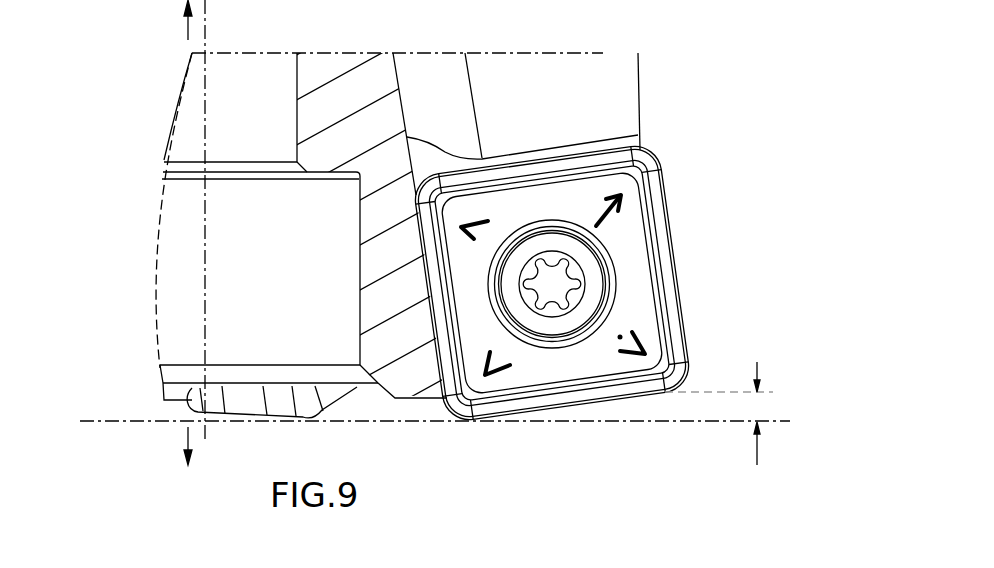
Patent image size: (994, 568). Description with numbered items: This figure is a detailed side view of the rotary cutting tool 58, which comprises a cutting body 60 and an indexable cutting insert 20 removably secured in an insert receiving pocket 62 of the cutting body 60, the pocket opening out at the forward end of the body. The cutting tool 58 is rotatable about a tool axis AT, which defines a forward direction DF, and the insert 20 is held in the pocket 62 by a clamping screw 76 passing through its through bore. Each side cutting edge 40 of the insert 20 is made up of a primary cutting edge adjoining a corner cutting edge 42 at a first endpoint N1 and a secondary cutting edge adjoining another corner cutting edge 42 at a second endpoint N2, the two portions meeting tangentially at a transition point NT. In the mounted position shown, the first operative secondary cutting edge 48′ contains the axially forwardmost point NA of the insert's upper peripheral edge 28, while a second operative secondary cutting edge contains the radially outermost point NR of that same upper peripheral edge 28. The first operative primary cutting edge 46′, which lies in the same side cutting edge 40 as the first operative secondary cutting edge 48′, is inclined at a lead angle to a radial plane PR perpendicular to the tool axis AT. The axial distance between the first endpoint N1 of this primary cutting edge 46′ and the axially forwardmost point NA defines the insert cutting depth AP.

The cutting insert 20 is at (574, 333).
The upper peripheral edge 28 is at (683, 260).
The side cutting edge 40 is at (678, 290).
The corner cutting edge 42 is at (697, 378).
The first operative primary cutting edge 46′ is at (582, 402).
The first operative secondary cutting edge 48′ is at (503, 422).
The rotary cutting tool 58 is at (163, 148).
The cutting body 60 is at (348, 85).
The insert receiving pocket 62 is at (562, 148).
The clamping screw 76 is at (572, 276).
The first endpoint N1 is at (657, 375).
The second endpoint N2 is at (688, 367).
The transition point NT is at (683, 322).
The radially outermost point NR is at (686, 357).
The axially forwardmost point NA is at (480, 420).
The radial plane PR is at (436, 429).
The tool axis AT is at (201, 241).
The forward direction DF is at (187, 466).
The insert cutting depth AP is at (719, 431).